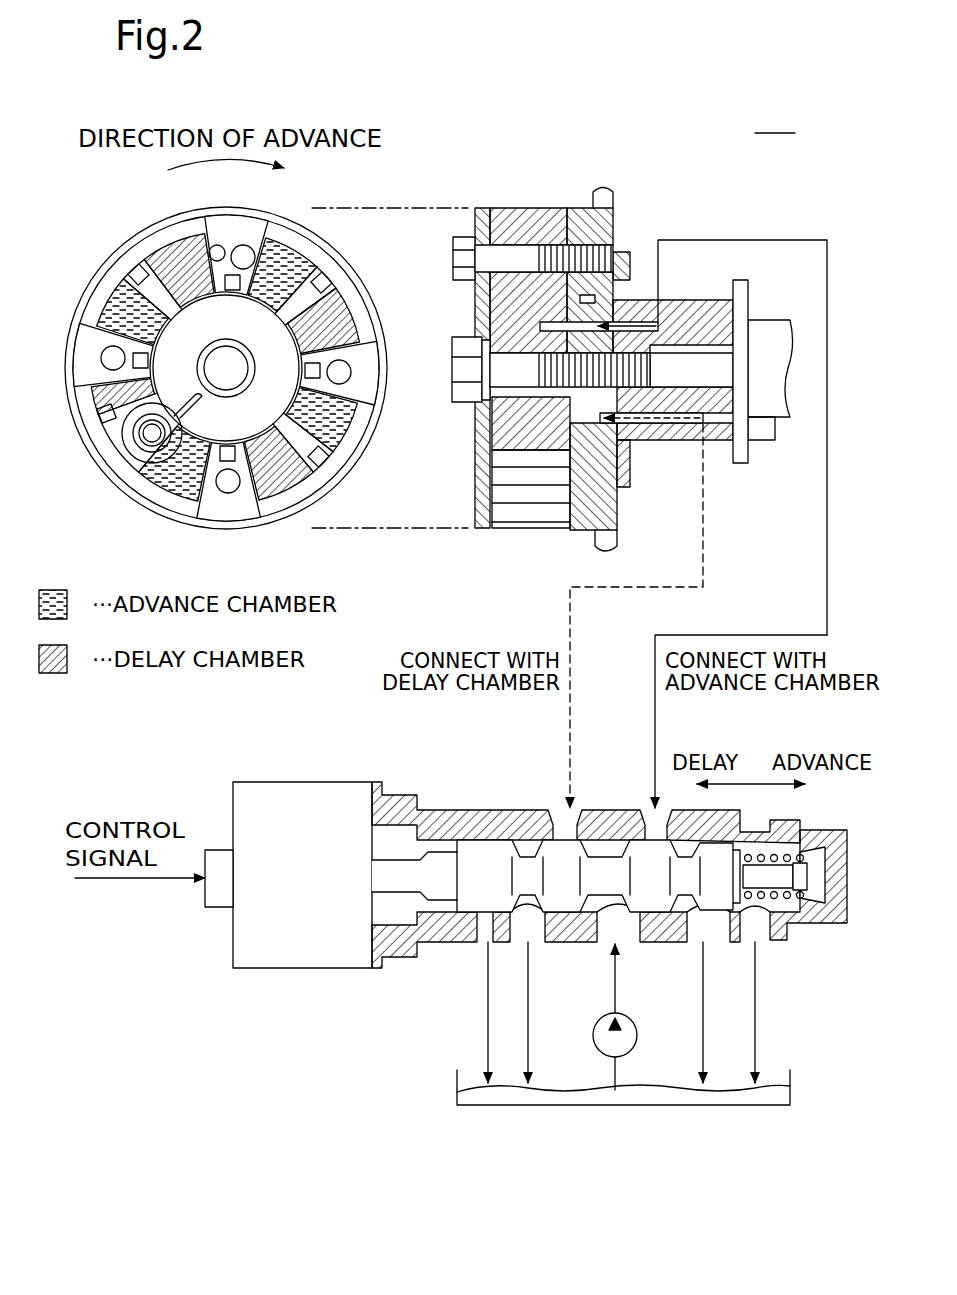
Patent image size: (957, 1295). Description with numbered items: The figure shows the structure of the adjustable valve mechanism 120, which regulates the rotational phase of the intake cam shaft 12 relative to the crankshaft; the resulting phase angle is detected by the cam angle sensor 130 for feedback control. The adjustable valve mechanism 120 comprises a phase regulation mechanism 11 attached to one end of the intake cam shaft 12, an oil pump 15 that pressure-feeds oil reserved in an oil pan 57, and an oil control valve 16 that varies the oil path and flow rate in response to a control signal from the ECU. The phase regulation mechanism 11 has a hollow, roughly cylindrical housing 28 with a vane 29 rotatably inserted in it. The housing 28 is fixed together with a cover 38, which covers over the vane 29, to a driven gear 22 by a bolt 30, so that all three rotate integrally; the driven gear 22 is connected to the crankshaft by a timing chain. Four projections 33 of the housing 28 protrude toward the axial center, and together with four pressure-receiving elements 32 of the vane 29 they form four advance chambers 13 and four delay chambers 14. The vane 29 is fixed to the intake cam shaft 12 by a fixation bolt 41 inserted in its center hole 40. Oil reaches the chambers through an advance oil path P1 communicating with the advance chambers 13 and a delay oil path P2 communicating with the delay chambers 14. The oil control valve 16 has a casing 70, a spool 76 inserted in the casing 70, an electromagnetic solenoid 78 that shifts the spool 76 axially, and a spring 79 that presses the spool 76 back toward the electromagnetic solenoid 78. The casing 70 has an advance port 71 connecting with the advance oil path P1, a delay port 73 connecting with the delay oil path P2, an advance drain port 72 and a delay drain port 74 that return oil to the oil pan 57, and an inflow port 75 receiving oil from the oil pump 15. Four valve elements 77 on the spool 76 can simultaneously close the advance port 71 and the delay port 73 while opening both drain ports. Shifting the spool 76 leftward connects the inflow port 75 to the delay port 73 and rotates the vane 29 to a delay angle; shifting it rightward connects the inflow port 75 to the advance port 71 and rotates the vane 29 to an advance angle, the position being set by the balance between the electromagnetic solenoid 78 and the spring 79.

The adjustable valve mechanism 120 is at (776, 122).
The phase regulation mechanism 11 is at (618, 480).
The intake cam shaft 12 is at (780, 322).
The advance chambers 13 is at (182, 483).
The delay chambers 14 is at (273, 478).
The oil pump 15 is at (638, 1030).
The oil control valve 16 is at (526, 895).
The driven gear 22 is at (603, 187).
The housing 28 is at (520, 210).
The vane 29 is at (273, 410).
The bolt 30 is at (465, 250).
The pressure-receiving elements 32 is at (150, 273).
The projections 33 is at (216, 246).
The cover 38 is at (475, 305).
The center hole 40 is at (238, 379).
The fixation bolt 41 is at (462, 375).
The oil pan 57 is at (740, 1106).
The casing 70 is at (446, 810).
The advance port 71 is at (645, 808).
The advance drain port 72 is at (710, 946).
The delay port 73 is at (558, 808).
The delay drain port 74 is at (536, 946).
The inflow port 75 is at (626, 946).
The spool 76 is at (442, 876).
The valve elements 77 is at (500, 892).
The electromagnetic solenoid 78 is at (294, 782).
The spring 79 is at (810, 903).
The cam angle sensor 130 is at (760, 463).
The advance oil path P1 is at (665, 302).
The delay oil path P2 is at (690, 432).